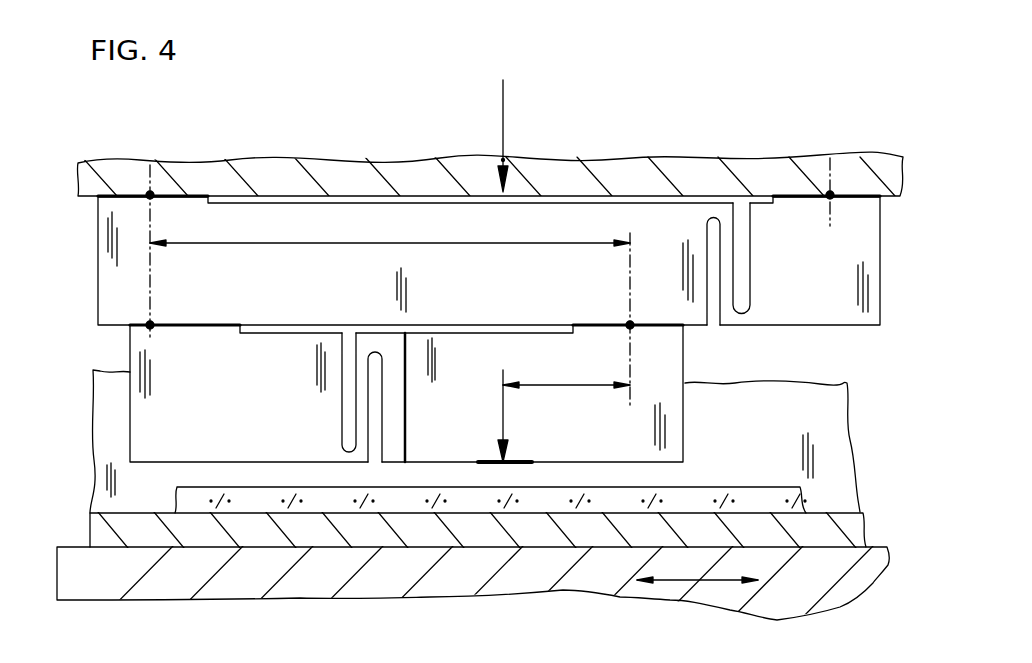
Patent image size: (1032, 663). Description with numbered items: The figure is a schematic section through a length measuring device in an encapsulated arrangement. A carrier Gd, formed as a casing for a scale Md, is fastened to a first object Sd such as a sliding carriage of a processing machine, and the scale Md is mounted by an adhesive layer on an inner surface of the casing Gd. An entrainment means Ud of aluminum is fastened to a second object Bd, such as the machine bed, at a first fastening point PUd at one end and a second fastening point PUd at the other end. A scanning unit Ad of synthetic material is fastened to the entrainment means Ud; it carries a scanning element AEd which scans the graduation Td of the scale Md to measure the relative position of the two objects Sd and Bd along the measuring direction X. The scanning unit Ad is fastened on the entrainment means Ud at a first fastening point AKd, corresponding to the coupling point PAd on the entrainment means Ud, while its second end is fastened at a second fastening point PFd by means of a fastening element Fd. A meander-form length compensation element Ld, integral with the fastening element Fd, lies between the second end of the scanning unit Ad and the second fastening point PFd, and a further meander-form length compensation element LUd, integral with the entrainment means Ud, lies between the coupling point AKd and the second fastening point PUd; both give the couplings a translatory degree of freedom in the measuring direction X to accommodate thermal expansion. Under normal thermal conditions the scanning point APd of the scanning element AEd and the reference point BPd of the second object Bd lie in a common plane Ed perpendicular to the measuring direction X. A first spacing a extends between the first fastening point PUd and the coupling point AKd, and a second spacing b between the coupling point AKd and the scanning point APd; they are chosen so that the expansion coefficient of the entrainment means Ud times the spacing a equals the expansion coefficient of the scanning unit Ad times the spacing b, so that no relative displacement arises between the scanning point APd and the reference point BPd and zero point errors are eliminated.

The second object Bd is at (355, 180).
The entrainment means Ud is at (831, 310).
The meander-form length compensation element LUd is at (727, 247).
The fastening point PUd is at (150, 195).
The reference point BPd is at (503, 160).
The plane Ed is at (503, 100).
The first spacing a is at (390, 252).
The second fastening point PFd is at (150, 325).
The coupling point PAd is at (630, 325).
The coupling point AKd is at (630, 325).
The fastening element Fd is at (147, 415).
The meander-form length compensation element Ld is at (360, 408).
The scanning unit Ad is at (673, 420).
The second spacing b is at (566, 319).
The scanning point APd is at (503, 425).
The scanning element AEd is at (527, 450).
The graduation Td is at (710, 483).
The scale Md is at (240, 502).
The carrier Gd is at (102, 537).
The first object Sd is at (360, 582).
The measuring direction X is at (697, 565).